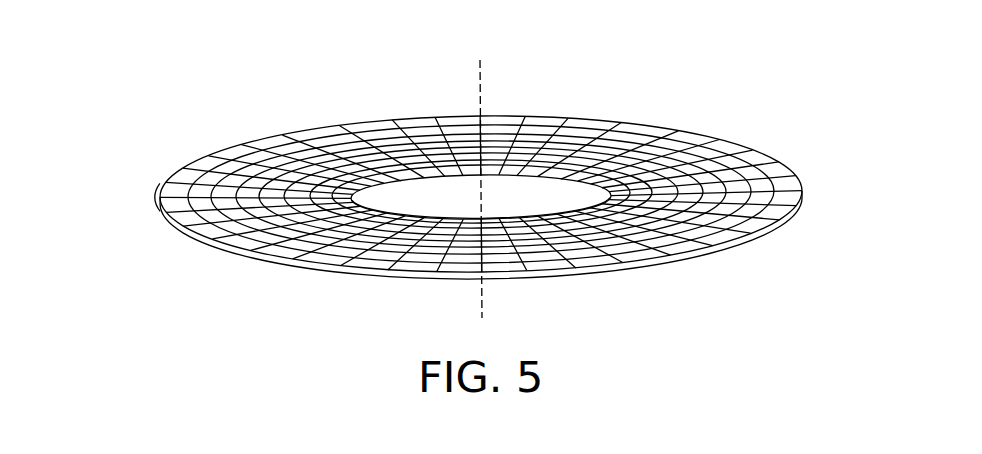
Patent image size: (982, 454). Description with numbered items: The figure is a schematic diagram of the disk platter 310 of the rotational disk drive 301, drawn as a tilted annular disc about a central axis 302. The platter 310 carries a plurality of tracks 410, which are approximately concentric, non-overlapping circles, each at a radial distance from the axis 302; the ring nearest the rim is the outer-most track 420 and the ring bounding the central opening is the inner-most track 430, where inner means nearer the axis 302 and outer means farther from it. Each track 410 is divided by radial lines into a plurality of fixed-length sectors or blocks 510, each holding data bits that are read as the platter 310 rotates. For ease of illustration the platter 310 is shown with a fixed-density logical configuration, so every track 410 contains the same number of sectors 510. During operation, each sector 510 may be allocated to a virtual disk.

The rotational disk drive 301 is at (457, 172).
The axis 302 is at (498, 90).
The disk platter 310 is at (777, 160).
The tracks 410 is at (250, 172).
The outer-most track 420 is at (718, 240).
The inner-most track 430 is at (604, 207).
The sectors 510 is at (170, 185).